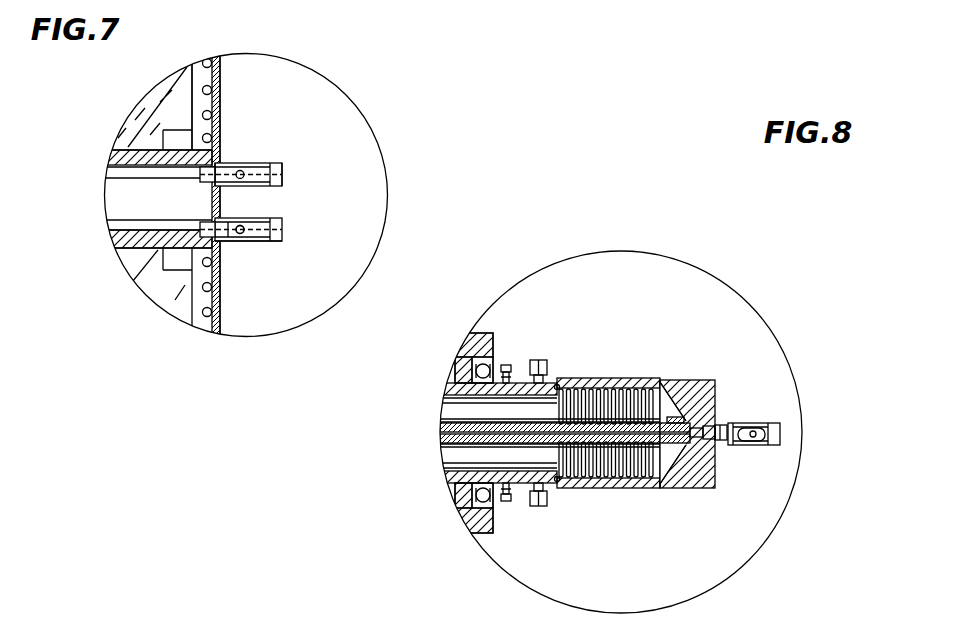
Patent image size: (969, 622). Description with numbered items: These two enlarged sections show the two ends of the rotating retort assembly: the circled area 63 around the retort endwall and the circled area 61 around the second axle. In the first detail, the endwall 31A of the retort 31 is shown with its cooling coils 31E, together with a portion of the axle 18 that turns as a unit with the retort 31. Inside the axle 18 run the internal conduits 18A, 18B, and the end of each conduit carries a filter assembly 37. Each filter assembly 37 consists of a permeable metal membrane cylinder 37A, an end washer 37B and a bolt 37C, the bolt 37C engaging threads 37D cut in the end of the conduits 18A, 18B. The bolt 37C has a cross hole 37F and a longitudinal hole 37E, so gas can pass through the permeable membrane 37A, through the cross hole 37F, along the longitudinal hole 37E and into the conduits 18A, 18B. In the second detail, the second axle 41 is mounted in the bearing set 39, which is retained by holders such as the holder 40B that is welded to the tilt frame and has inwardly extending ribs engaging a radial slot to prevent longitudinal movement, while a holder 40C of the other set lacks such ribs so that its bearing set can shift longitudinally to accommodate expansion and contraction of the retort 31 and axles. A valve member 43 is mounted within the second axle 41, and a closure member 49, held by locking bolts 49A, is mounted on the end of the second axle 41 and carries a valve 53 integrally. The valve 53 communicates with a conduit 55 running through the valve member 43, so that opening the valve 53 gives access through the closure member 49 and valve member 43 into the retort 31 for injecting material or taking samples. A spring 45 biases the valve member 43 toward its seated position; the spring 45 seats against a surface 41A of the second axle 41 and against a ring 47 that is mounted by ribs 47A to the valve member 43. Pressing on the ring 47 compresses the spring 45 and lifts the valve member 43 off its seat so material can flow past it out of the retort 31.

In FIG. 7, the axle 18 is at (130, 152).
In FIG. 7, the internal conduit 18A is at (133, 176).
In FIG. 7, the internal conduit 18B is at (142, 250).
In FIG. 7, the retort 31 is at (195, 66).
In FIG. 7, the endwall 31A is at (218, 94).
In FIG. 7, the cooling coils 31E is at (205, 88).
In FIG. 7, the filter assembly 37 is at (294, 231).
In FIG. 7, the permeable metal membrane cylinder 37A is at (250, 239).
In FIG. 7, the end washer 37B is at (265, 186).
In FIG. 7, the bolt 37C is at (284, 166).
In FIG. 7, the threads 37D is at (214, 160).
In FIG. 7, the longitudinal hole 37E is at (230, 233).
In FIG. 7, the cross hole 37F is at (243, 236).
In FIG. 7, the circled area 63 is at (390, 173).
In FIG. 8, the circled area 61 is at (702, 260).
In FIG. 8, the bearing set 39 is at (496, 358).
In FIG. 8, the holder 40B is at (475, 352).
In FIG. 8, the holder 40C is at (470, 522).
In FIG. 8, the second axle 41 is at (455, 477).
In FIG. 8, the surface 41A is at (557, 384).
In FIG. 8, the valve member 43 is at (452, 433).
In FIG. 8, the spring 45 is at (622, 474).
In FIG. 8, the ring 47 is at (662, 385).
In FIG. 8, the ribs 47A is at (663, 413).
In FIG. 8, the closure member 49 is at (697, 382).
In FIG. 8, the locking bolts 49A is at (540, 510).
In FIG. 8, the valve 53 is at (773, 447).
In FIG. 8, the conduit 55 is at (695, 437).